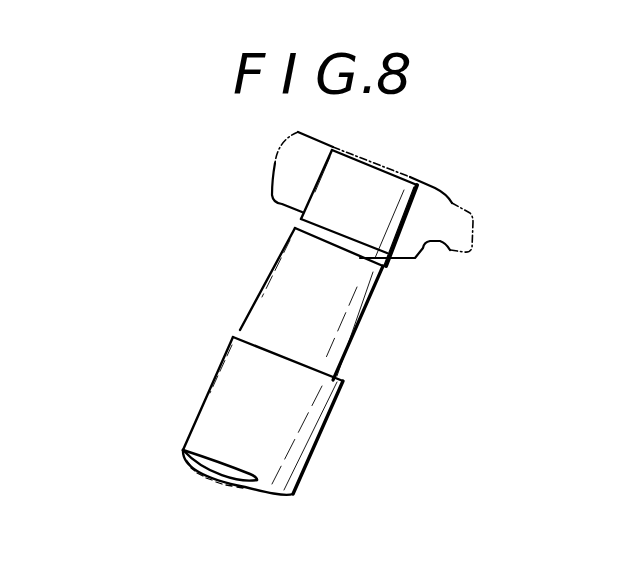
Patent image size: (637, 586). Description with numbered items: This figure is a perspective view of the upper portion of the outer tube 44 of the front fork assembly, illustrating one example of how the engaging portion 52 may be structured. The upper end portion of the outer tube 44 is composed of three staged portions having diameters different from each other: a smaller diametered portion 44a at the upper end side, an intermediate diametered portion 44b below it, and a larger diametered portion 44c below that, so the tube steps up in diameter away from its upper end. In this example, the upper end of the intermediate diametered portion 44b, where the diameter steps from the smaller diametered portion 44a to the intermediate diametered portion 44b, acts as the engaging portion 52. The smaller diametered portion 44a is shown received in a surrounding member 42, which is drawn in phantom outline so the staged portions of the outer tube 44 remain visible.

The holder 42 is at (285, 172).
The outer tube 44 is at (323, 428).
The smaller diametered portion 44a is at (322, 198).
The intermediate diametered portion 44b is at (337, 347).
The larger diametered portion 44c is at (205, 432).
The engaging portion 52 is at (365, 256).